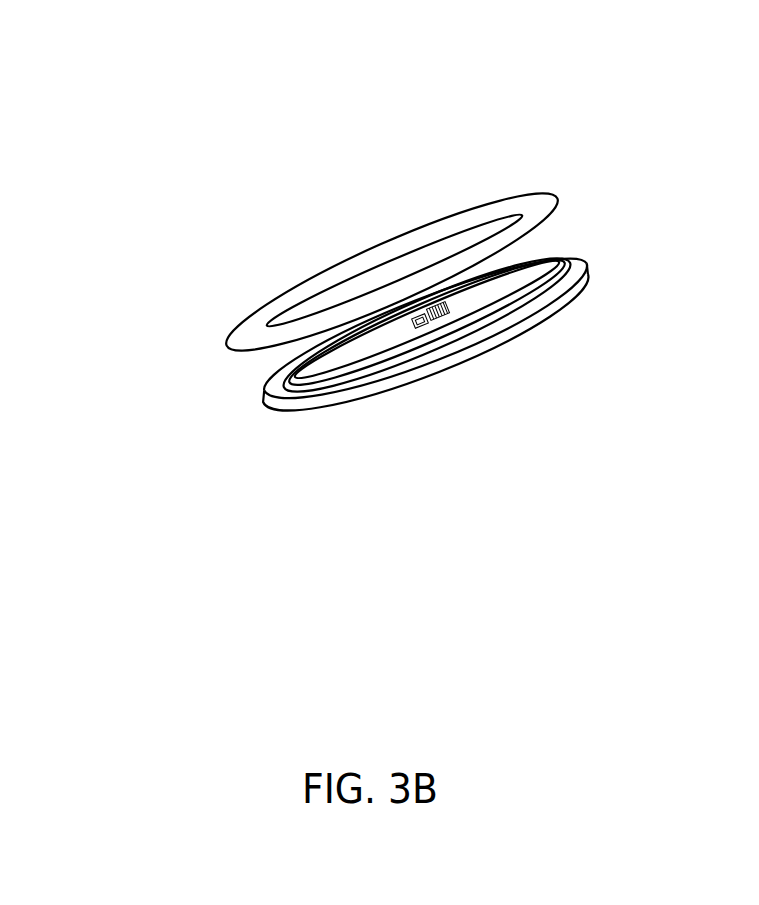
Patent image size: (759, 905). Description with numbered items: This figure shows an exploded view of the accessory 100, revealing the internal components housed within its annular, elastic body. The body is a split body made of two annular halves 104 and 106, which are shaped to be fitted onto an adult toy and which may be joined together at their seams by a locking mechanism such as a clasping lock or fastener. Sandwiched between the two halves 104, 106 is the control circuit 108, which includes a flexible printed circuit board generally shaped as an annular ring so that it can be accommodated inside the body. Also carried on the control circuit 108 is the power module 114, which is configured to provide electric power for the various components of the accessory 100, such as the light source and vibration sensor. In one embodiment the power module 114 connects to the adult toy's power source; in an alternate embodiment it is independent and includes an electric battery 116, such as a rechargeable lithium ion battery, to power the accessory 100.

The accessory 100 is at (591, 141).
The annular half 104 is at (238, 326).
The annular half 106 is at (283, 417).
The control circuit 108 is at (568, 256).
The power module 114 is at (420, 328).
The electric battery 116 is at (439, 321).